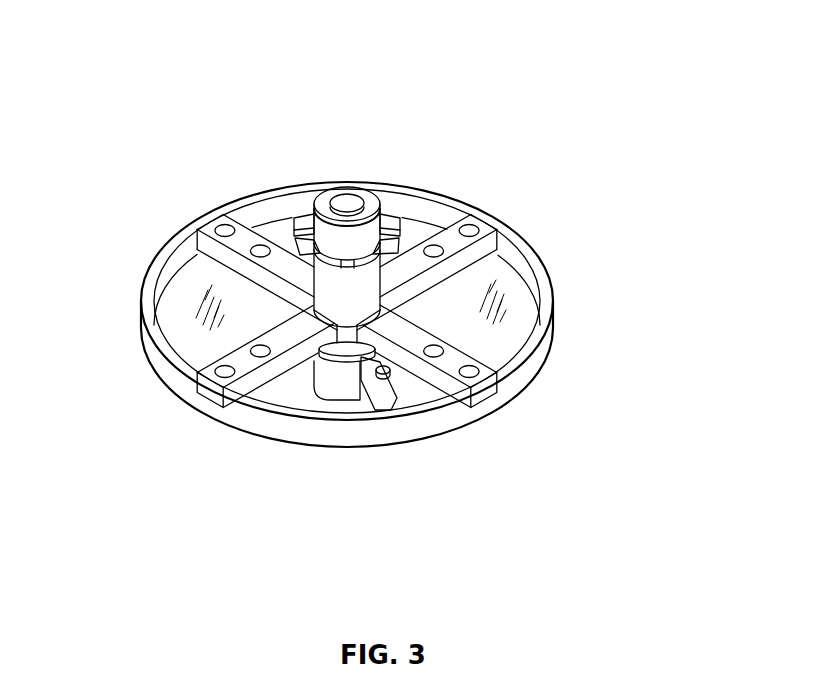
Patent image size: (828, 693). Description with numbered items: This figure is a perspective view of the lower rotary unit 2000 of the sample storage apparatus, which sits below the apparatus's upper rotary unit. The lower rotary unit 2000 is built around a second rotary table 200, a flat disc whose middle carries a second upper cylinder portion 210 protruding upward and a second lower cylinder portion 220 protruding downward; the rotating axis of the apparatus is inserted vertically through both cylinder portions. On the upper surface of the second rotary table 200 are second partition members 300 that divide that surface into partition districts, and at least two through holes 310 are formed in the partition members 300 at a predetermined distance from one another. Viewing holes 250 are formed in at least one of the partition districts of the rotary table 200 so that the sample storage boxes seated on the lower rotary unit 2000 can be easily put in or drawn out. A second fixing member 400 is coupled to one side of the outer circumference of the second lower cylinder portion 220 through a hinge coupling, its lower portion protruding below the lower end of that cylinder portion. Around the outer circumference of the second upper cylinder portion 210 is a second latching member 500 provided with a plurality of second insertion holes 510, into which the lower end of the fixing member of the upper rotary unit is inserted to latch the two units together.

The lower rotary unit 2000 is at (284, 122).
The second rotary table 200 is at (547, 289).
The second upper cylinder portion 210 is at (240, 262).
The second lower cylinder portion 220 is at (342, 390).
The viewing hole 250 is at (226, 398).
The second partition member 300 is at (498, 246).
The through hole 310 is at (220, 229).
The second fixing member 400 is at (385, 400).
The second latching member 500 is at (391, 205).
The second insertion hole 510 is at (402, 230).